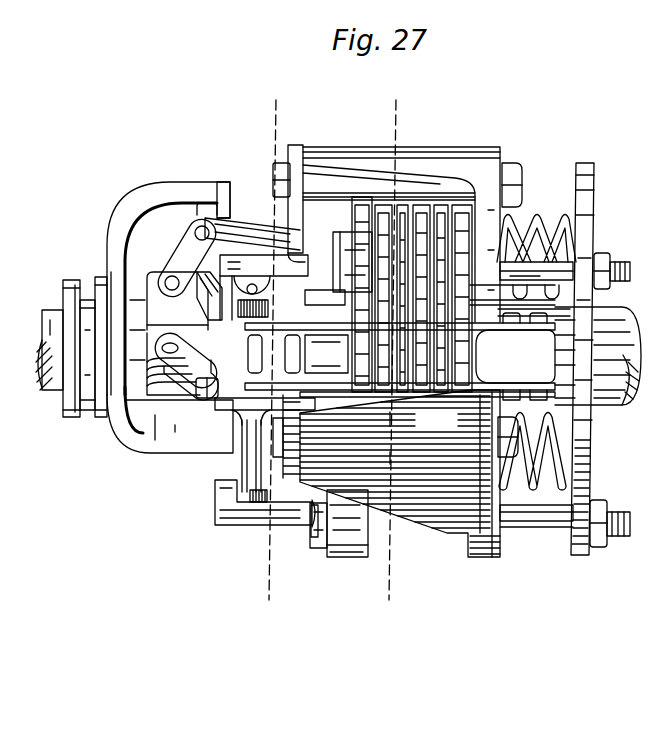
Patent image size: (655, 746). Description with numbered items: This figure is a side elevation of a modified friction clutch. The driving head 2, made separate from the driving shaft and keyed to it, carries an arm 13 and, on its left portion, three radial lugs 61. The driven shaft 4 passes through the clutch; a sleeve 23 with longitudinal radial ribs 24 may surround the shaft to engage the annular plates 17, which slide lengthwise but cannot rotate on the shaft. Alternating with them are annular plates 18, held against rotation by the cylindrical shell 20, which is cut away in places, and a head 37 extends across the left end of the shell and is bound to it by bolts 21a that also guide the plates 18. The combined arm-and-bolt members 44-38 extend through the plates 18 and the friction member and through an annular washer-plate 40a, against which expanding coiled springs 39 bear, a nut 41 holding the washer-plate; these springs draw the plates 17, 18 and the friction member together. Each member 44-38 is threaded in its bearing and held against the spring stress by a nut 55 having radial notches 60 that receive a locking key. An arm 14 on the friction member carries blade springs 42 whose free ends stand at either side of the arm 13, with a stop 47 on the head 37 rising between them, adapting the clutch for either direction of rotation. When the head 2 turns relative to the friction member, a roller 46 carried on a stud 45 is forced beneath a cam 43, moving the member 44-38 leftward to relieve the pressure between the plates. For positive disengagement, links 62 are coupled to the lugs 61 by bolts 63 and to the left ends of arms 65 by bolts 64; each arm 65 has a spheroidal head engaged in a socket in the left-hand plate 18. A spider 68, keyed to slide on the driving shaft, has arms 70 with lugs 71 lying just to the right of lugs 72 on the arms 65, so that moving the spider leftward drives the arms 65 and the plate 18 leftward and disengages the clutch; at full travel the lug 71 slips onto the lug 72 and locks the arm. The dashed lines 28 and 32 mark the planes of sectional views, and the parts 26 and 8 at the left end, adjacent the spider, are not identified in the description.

The driving head 2 is at (248, 355).
The driven shaft 4 is at (605, 380).
The bearing 8 is at (31, 311).
The arm 13 is at (216, 472).
The arm 14 is at (515, 356).
The annular plates 17 is at (458, 353).
The annular plates 18 is at (360, 220).
The cylindrical shell 20 is at (430, 158).
The bolts 21a is at (280, 165).
The sleeve 23 is at (331, 339).
The longitudinal radial ribs 24 is at (326, 331).
The disc 26 is at (85, 290).
The section line 28— 28 is at (272, 339).
The section line 32— 32 is at (395, 337).
The head 37 is at (295, 220).
The expanding coiled spring 39 is at (535, 237).
The annular washer-plate 40a is at (583, 175).
The nut 41 is at (598, 265).
The blade spring 42 is at (508, 331).
The cam 43 is at (250, 304).
The combined arm and bolt member 44-38 is at (428, 570).
The stud 45 is at (202, 298).
The anti-friction roller 46 is at (225, 305).
The stop 47 is at (293, 354).
The nut 55 is at (336, 255).
The radial notches 60 is at (311, 520).
The radial lugs 61 is at (96, 449).
The link 62 is at (186, 309).
The bolt or shaft 63 is at (168, 278).
The bolt or shaft 64 is at (200, 378).
The arm 65 is at (195, 234).
The spider 68 is at (113, 285).
The spider arm 70 is at (170, 315).
The lug 71 is at (226, 307).
The lug 72 is at (200, 213).